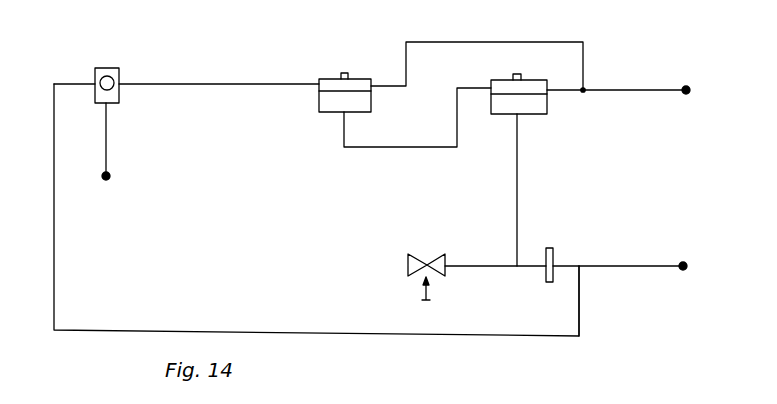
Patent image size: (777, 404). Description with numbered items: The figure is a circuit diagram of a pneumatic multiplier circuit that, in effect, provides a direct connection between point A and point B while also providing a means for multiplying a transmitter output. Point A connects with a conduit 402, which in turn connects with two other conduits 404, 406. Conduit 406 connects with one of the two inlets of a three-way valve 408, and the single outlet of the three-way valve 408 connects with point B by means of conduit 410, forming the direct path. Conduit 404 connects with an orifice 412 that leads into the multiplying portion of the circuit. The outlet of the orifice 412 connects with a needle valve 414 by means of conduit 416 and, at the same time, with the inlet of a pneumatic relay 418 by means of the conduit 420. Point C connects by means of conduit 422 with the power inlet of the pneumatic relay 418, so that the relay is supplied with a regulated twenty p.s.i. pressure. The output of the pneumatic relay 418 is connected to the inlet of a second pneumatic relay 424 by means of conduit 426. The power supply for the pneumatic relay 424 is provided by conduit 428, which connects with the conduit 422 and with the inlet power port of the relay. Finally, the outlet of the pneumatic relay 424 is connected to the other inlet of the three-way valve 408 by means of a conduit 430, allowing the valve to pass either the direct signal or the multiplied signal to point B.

The conduit 402 is at (640, 268).
The conduit 404 is at (569, 265).
The conduit 406 is at (512, 338).
The three-way valve 408 is at (113, 68).
The conduit 410 is at (108, 147).
The orifice 412 is at (553, 272).
The needle valve 414 is at (437, 261).
The conduit 416 is at (492, 267).
The pneumatic relay 418 is at (530, 108).
The conduit 420 is at (517, 205).
The conduit 422 is at (656, 90).
The second pneumatic relay 424 is at (335, 103).
The conduit 426 is at (407, 148).
The conduit 428 is at (462, 42).
The conduit 430 is at (270, 84).